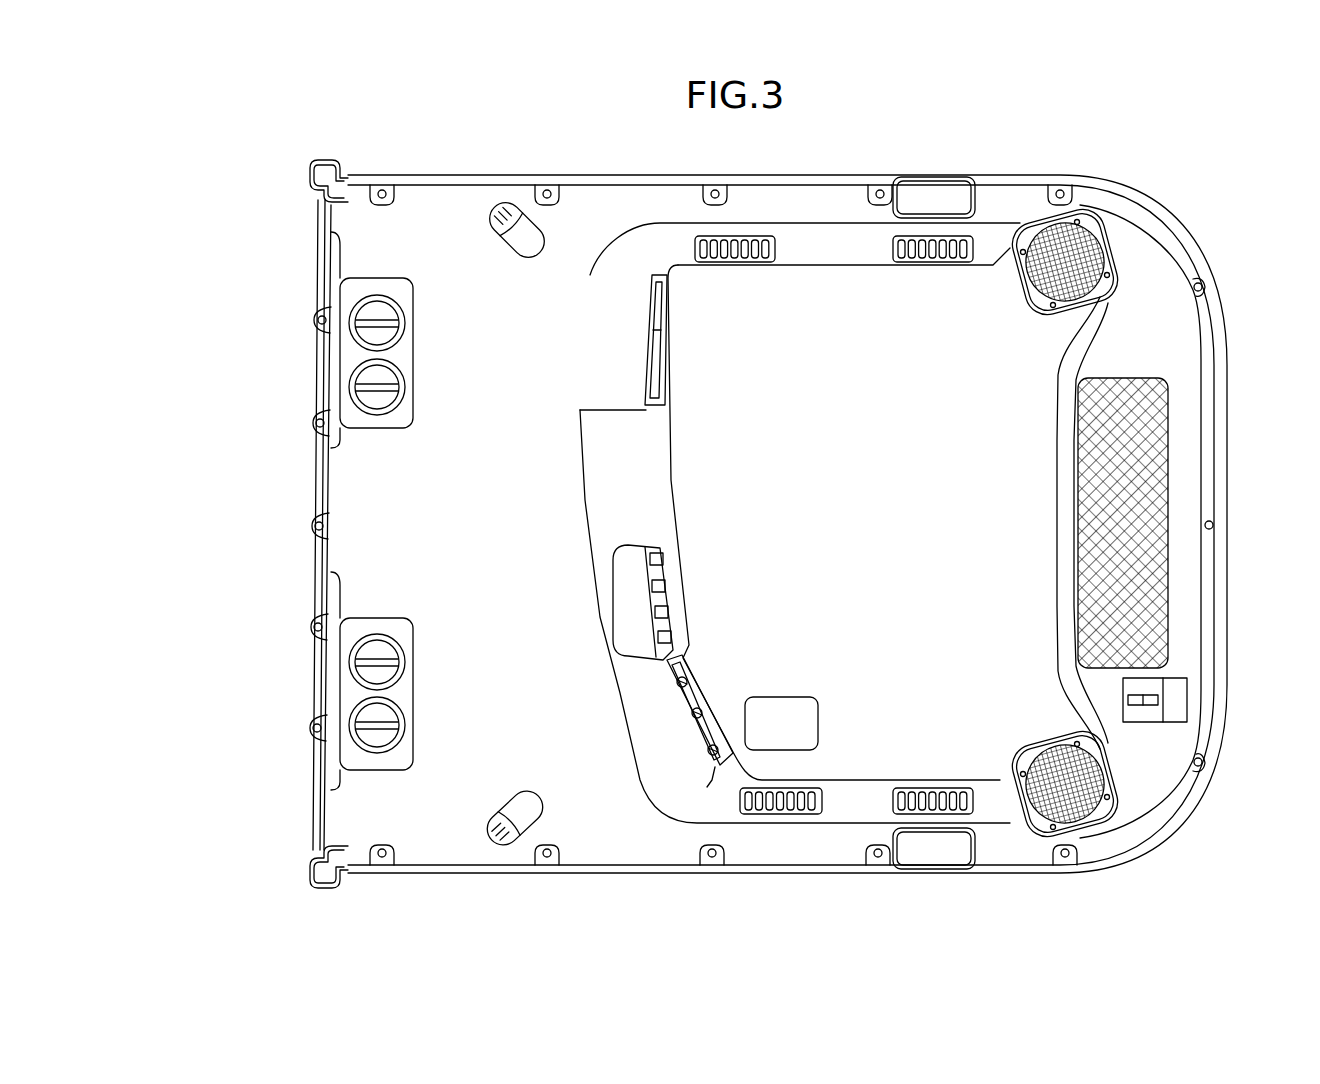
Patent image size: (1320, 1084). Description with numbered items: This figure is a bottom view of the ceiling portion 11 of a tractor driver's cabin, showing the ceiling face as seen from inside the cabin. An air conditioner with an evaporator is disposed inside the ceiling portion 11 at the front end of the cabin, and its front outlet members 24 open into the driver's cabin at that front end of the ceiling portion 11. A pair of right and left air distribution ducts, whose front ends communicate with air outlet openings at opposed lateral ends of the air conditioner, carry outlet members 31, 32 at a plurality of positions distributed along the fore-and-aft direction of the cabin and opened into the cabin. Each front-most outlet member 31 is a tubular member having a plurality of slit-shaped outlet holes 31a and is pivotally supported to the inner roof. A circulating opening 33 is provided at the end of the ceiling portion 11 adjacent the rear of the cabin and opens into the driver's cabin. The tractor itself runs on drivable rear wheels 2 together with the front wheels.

The rear wheels 2 is at (935, 177).
The ceiling portion 11 is at (355, 507).
The front outlet members 24 is at (404, 357).
The outlet member 31 is at (537, 247).
The outlet holes 31a is at (508, 210).
The outlet members 32 is at (749, 254).
The circulating opening 33 is at (1080, 538).